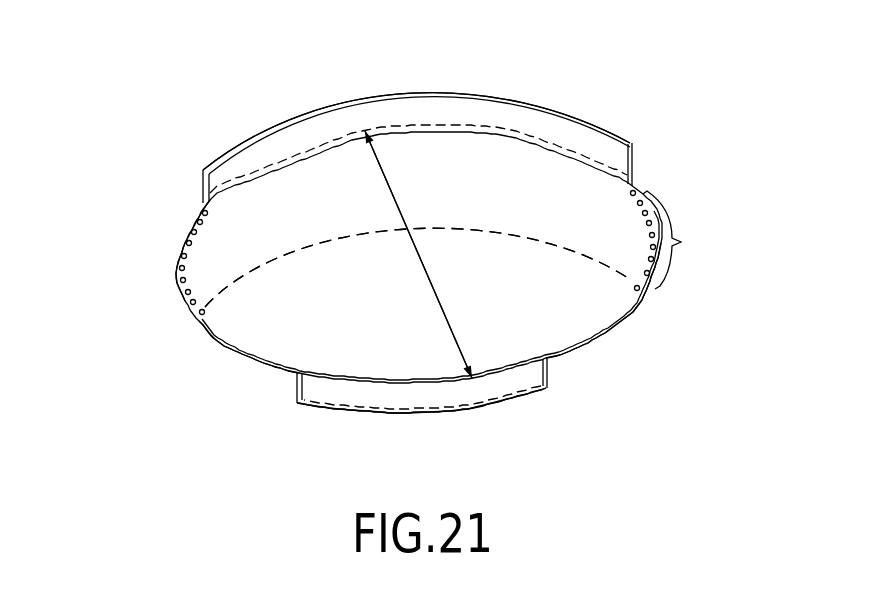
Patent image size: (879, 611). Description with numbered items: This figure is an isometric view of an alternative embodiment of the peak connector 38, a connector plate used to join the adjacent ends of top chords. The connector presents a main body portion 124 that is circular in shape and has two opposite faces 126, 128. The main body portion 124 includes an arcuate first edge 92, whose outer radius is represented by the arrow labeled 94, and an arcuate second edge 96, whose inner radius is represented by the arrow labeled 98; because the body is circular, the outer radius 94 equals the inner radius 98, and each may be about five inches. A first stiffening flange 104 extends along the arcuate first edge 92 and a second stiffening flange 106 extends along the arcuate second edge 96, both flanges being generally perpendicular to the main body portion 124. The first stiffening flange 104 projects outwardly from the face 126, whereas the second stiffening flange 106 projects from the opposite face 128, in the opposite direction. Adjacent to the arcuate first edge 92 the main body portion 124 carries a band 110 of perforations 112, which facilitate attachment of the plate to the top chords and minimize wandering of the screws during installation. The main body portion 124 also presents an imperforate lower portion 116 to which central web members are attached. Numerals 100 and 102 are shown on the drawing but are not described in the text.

The peak connector 38 is at (690, 147).
The arcuate first edge 92 is at (538, 136).
The outer radius 94 is at (392, 190).
The arcuate second edge 96 is at (452, 380).
The inner radius 98 is at (448, 318).
The side wall 100 is at (220, 332).
The rim edge 102 is at (626, 312).
The first stiffening flange 104 is at (452, 92).
The second stiffening flange 106 is at (373, 400).
The band of perforations 110 is at (682, 242).
The perforations 112 is at (188, 256).
The imperforate lower portion 116 is at (373, 340).
The main body portion 124 is at (185, 304).
The face 126 is at (370, 297).
The face 128 is at (270, 370).